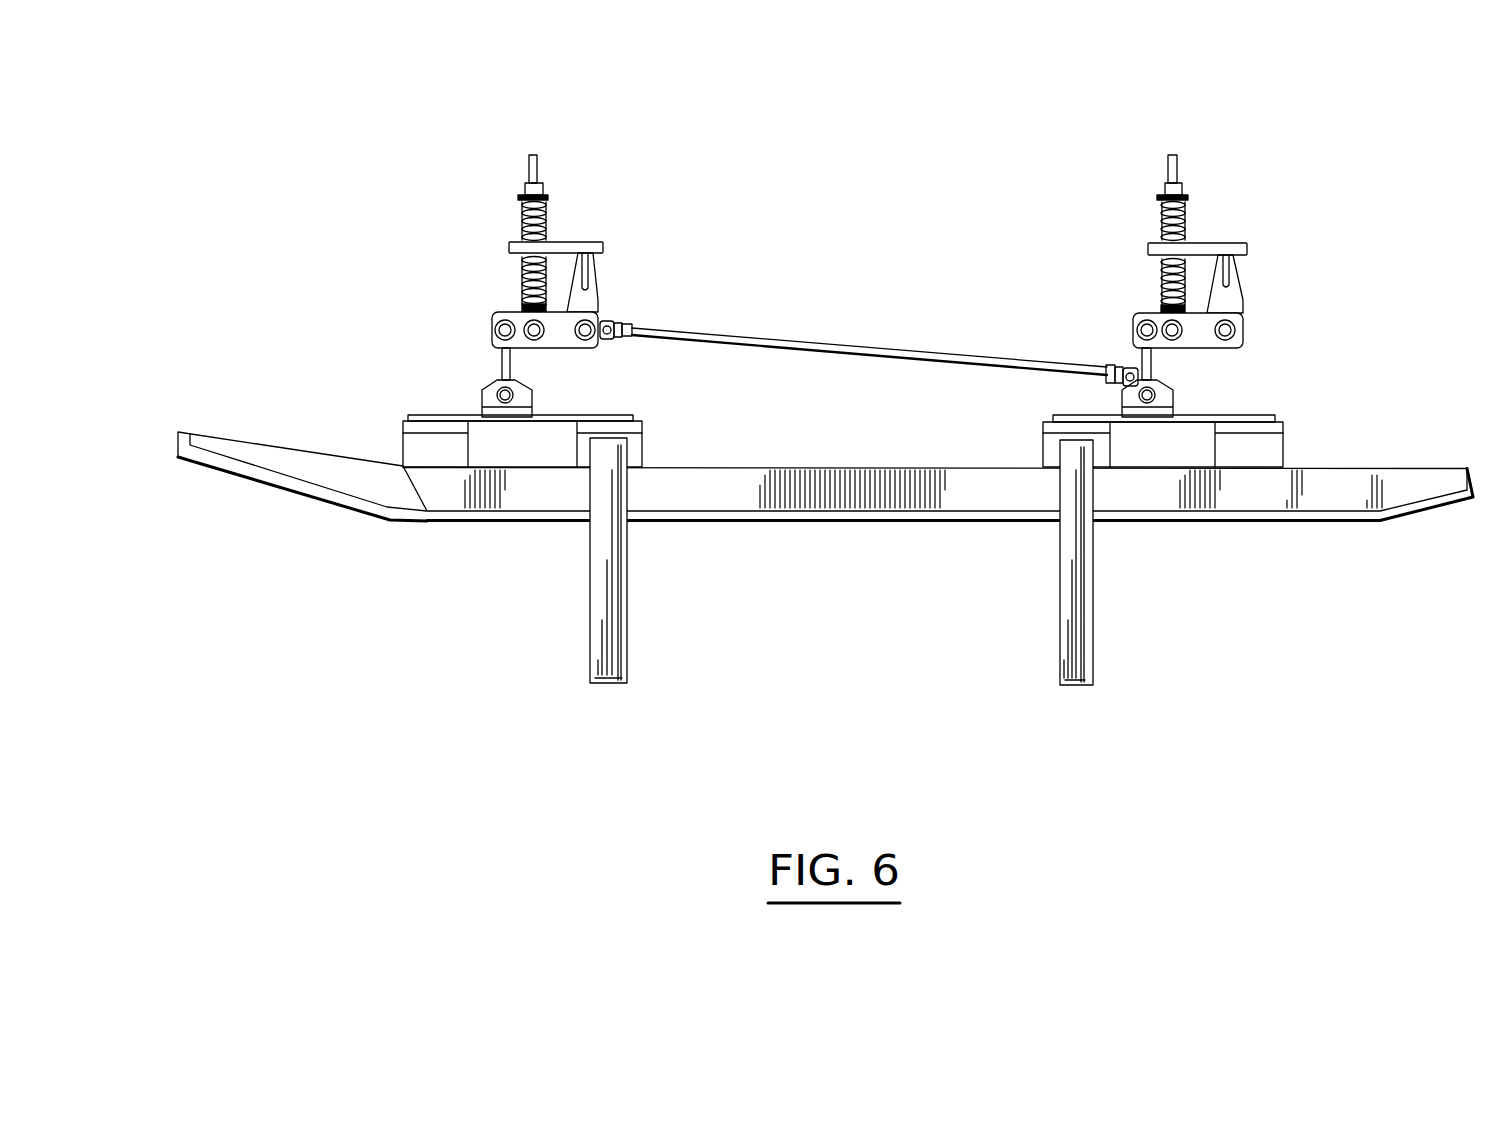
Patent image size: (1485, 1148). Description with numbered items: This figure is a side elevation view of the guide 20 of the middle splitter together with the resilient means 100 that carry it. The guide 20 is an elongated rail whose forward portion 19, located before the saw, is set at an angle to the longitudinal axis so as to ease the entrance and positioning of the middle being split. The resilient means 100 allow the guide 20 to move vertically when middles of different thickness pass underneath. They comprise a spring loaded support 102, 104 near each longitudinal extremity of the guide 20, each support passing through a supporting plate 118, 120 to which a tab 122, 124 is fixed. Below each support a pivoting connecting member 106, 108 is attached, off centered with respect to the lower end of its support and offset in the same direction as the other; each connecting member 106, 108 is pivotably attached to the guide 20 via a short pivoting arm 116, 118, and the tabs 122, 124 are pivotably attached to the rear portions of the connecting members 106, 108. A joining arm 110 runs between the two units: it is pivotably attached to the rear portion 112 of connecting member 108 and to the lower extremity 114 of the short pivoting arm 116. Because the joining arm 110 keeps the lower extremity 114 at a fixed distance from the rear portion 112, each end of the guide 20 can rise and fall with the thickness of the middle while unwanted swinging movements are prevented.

The angled portion 19 is at (345, 480).
The guide 20 is at (848, 514).
The resilient means 100 is at (866, 244).
The spring loaded support 102 is at (1185, 213).
The spring loaded support 104 is at (525, 212).
The pivoting connecting member 106 is at (1212, 340).
The pivoting connecting member 108 is at (518, 317).
The joining arm 110 is at (857, 352).
The rear portion 112 is at (617, 340).
The lower extremity 114 is at (1111, 341).
The short pivoting arm 116 is at (1155, 362).
The short pivoting arm / supporting plate 118 is at (500, 367).
The supporting plate 120 is at (587, 247).
The tab 122 is at (1233, 300).
The tab 124 is at (590, 300).